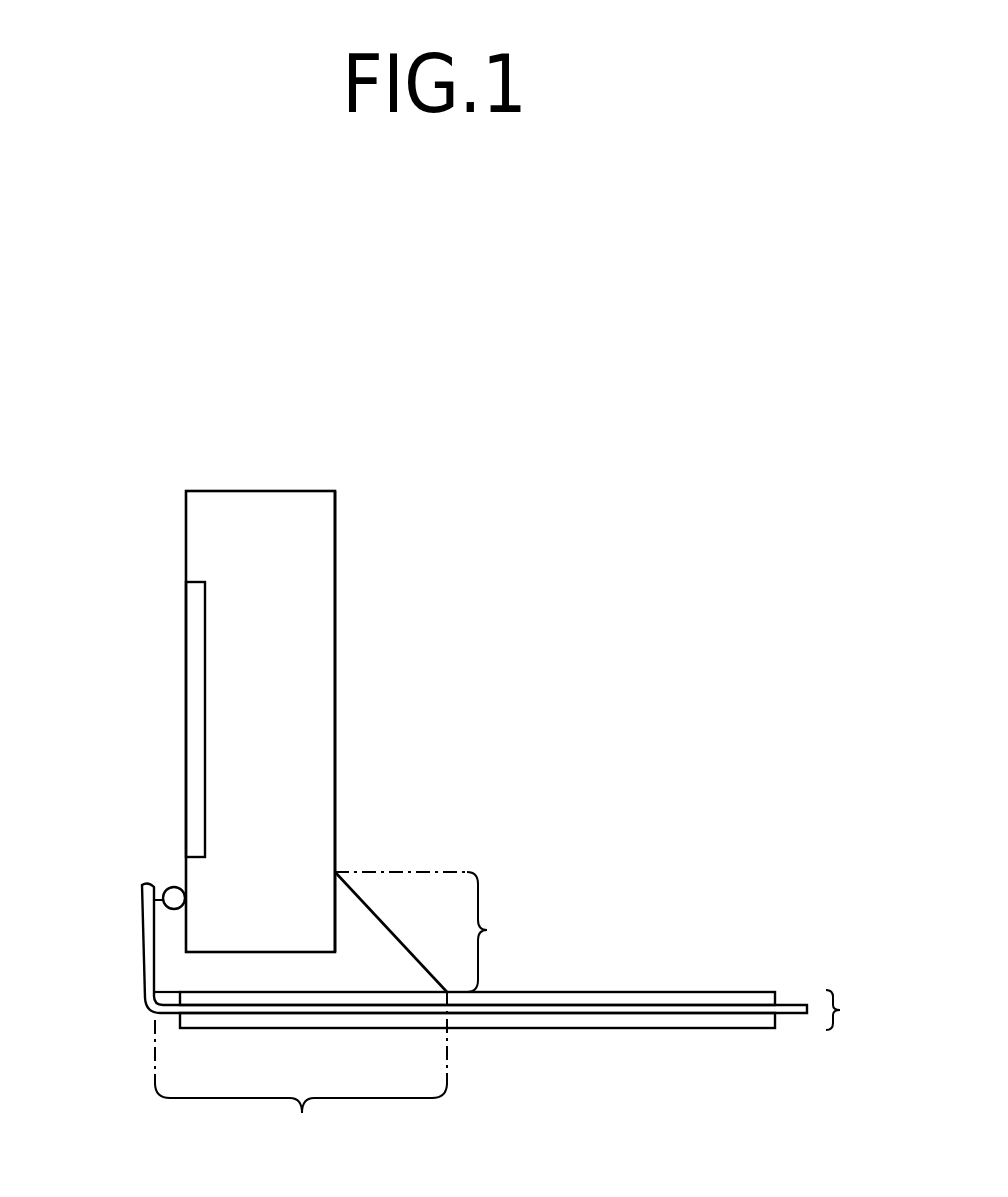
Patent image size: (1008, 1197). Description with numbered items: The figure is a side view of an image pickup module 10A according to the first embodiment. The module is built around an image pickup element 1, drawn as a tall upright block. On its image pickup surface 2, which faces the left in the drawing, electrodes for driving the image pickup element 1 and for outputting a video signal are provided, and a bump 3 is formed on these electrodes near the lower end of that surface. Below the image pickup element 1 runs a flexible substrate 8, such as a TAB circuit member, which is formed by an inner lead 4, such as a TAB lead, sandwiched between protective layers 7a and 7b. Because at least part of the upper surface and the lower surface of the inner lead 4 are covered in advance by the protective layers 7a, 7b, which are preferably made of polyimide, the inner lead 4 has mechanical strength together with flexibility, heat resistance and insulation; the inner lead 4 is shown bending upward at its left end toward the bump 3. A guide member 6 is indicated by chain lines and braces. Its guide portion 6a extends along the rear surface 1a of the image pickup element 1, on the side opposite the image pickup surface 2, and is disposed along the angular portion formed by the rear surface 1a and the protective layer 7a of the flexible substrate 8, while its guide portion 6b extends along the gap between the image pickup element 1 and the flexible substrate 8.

The image pickup module 10A is at (693, 448).
The image pickup element 1 is at (203, 522).
The rear surface 1a is at (335, 525).
The image pickup surface 2 is at (185, 643).
The bump 3 is at (175, 883).
The inner lead 4 is at (145, 960).
The guide member 6 is at (533, 962).
The guide portion 6a is at (510, 932).
The guide portion 6b is at (301, 1125).
The protective layer 7a is at (642, 992).
The protective layer 7b is at (590, 1028).
The flexible substrate 8 is at (882, 1029).